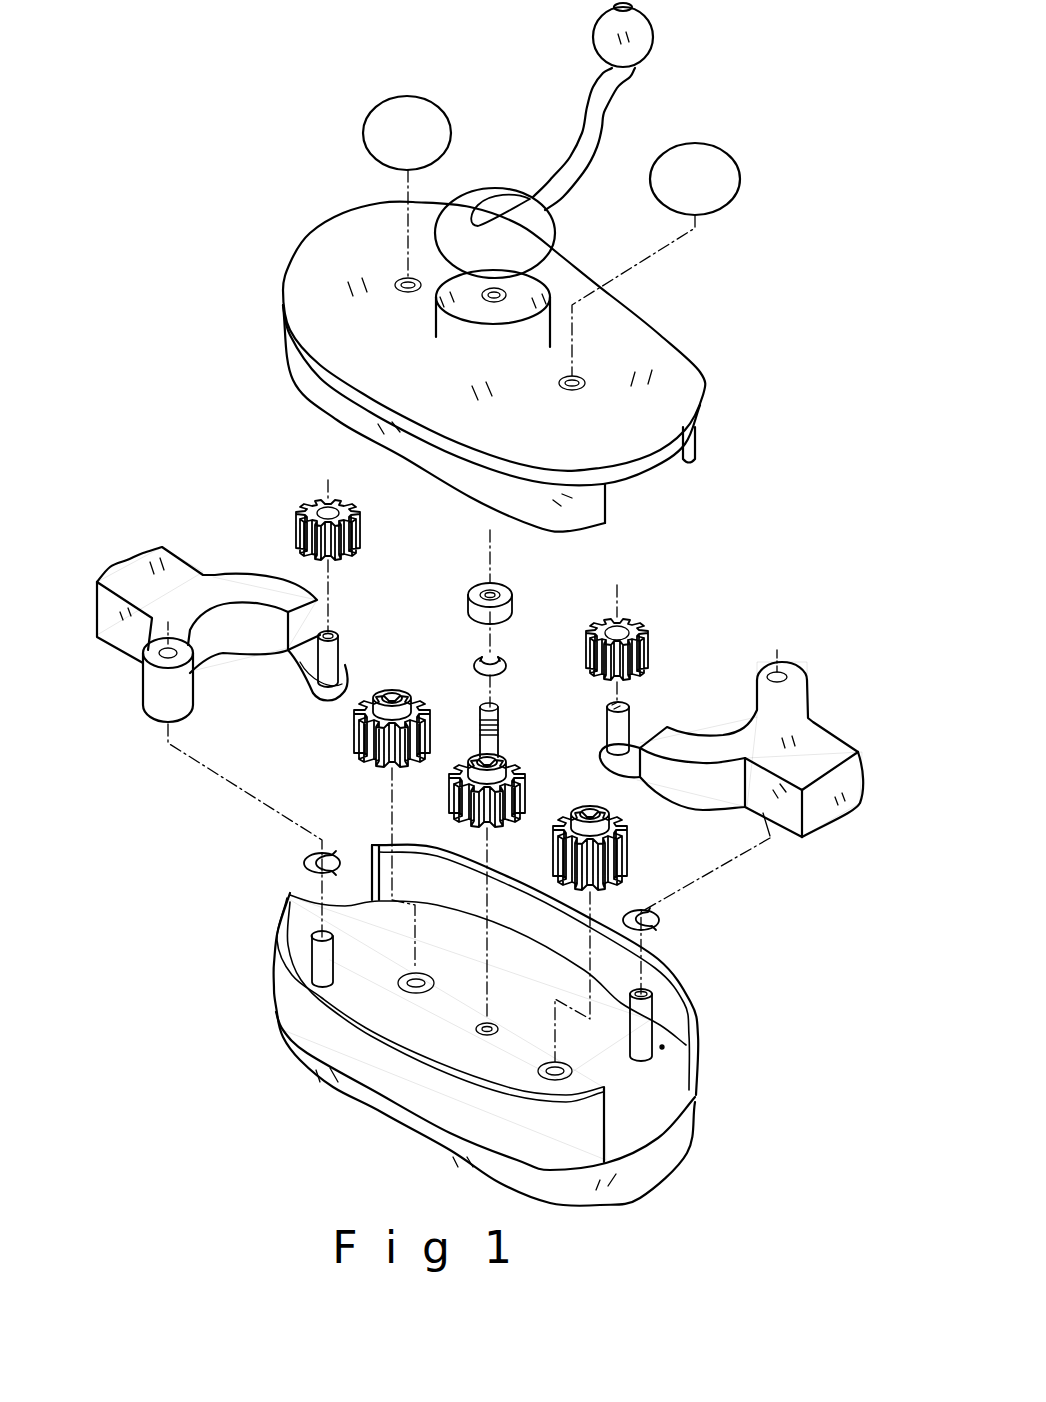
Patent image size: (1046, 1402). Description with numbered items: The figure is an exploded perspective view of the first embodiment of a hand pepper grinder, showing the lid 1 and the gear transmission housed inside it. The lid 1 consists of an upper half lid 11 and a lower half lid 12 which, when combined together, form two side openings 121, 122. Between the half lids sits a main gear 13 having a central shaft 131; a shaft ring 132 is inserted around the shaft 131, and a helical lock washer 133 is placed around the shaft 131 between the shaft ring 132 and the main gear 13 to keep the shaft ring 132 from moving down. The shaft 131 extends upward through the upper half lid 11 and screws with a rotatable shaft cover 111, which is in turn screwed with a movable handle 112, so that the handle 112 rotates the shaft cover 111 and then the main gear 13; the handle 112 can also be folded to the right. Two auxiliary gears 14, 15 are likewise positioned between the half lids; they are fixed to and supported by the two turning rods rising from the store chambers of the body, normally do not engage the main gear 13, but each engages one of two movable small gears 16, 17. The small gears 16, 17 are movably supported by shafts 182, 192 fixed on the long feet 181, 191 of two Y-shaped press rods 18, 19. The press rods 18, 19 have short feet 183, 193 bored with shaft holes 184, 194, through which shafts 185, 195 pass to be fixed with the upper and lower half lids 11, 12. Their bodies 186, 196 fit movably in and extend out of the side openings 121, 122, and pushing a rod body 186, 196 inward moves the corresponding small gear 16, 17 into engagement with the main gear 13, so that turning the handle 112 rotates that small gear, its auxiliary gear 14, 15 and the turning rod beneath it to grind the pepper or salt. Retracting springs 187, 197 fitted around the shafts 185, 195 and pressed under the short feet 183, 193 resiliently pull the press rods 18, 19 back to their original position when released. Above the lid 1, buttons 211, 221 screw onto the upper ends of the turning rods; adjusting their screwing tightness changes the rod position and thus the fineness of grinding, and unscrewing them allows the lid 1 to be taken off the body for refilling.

The lid 1 is at (572, 278).
The upper half lid 11 is at (663, 335).
The rotatable shaft cover 111 is at (479, 205).
The movable handle 112 is at (618, 90).
The lower half lid 12 is at (486, 1024).
The side opening 121 is at (338, 920).
The side opening 122 is at (643, 1120).
The main gear 13 is at (518, 758).
The central shaft 131 is at (503, 720).
The shaft ring 132 is at (507, 583).
The helical lock washer 133 is at (507, 657).
The auxiliary gear 14 is at (410, 684).
The auxiliary gear 15 is at (584, 813).
The movable small gear 16 is at (347, 493).
The movable small gear 17 is at (631, 620).
The Y-shaped press rod 18 is at (236, 702).
The long foot 181 is at (253, 583).
The shaft 182 is at (333, 650).
The short foot 183 is at (162, 722).
The shaft hole 184 is at (163, 658).
The shaft 185 is at (320, 960).
The rod body 186 is at (153, 557).
The retracting spring 187 is at (303, 859).
The Y-shaped press rod 19 is at (732, 786).
The long foot 191 is at (690, 801).
The shaft 192 is at (622, 727).
The short foot 193 is at (758, 668).
The shaft hole 194 is at (782, 672).
The shaft 195 is at (642, 1017).
The rod body 196 is at (825, 818).
The retracting spring 197 is at (660, 920).
The button 211 is at (395, 107).
The button 221 is at (726, 160).